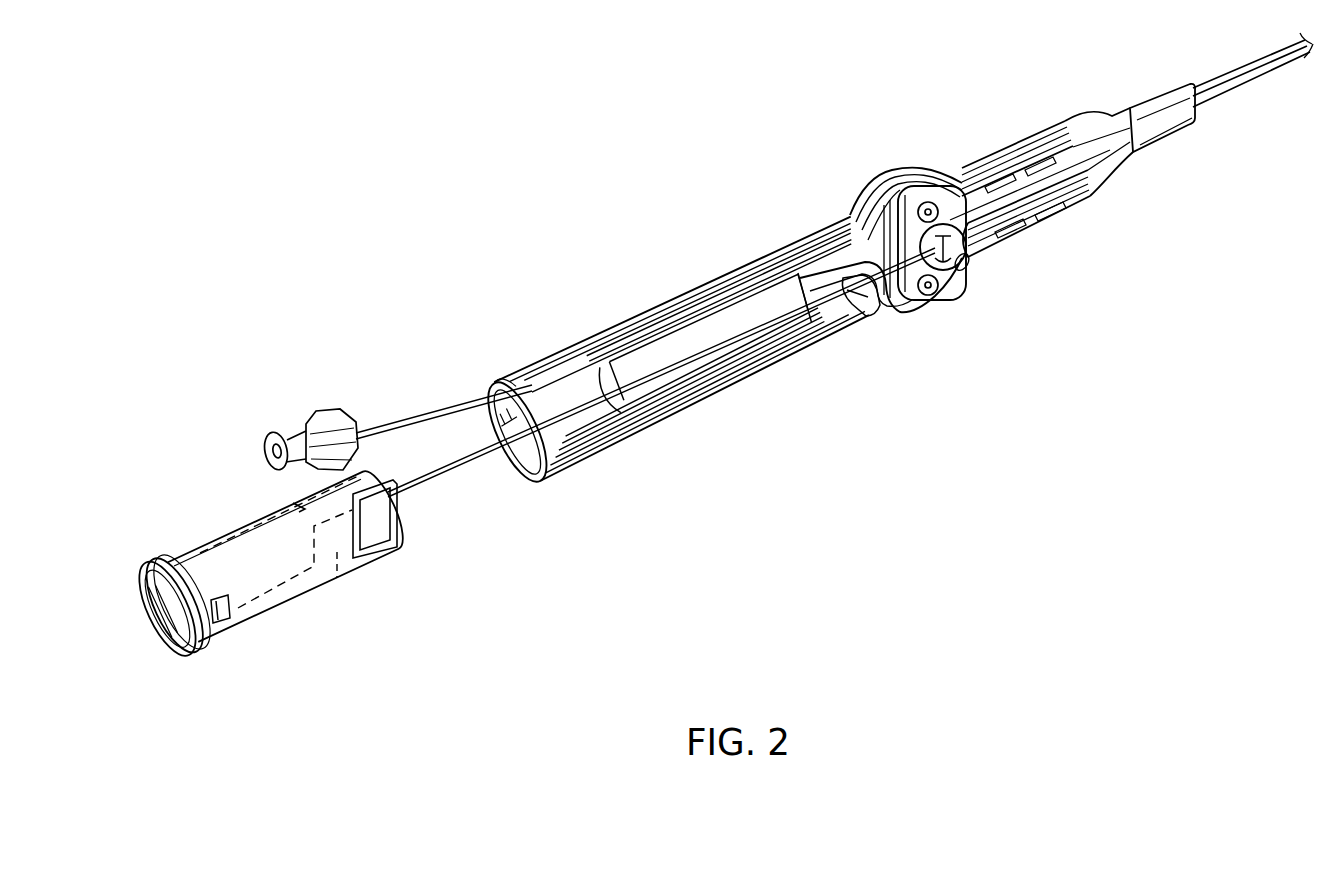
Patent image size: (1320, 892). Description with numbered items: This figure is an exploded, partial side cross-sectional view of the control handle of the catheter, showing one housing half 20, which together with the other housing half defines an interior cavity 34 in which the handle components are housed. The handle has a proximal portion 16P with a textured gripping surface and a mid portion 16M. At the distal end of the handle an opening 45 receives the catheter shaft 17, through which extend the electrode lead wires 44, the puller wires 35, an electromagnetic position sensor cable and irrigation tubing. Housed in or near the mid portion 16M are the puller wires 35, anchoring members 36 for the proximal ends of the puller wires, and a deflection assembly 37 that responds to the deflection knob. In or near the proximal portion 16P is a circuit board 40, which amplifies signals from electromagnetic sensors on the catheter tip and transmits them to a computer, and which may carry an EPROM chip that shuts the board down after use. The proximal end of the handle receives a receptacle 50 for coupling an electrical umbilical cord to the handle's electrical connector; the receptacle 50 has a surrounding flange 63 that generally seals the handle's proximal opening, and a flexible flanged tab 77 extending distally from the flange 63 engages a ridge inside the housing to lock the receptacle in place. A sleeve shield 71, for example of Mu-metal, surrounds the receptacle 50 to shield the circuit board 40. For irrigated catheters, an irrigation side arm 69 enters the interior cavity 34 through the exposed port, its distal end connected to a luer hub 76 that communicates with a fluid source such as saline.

The proximal portion 16P is at (613, 332).
The mid portion 16M is at (890, 316).
The catheter shaft 17 is at (1265, 82).
The housing half 20 is at (777, 252).
The interior cavity 34 is at (598, 420).
The puller wires 35 is at (957, 205).
The anchoring members 36 is at (1018, 168).
The deflection assembly 37 is at (948, 272).
The circuit board 40 is at (335, 553).
The electrode lead wires 44 is at (1120, 135).
The opening 45 is at (1195, 88).
The receptacle 50 is at (278, 592).
The flange 63 is at (150, 557).
The irrigation side arm 69 is at (418, 408).
The sleeve shield 71 is at (224, 540).
The luer hub 76 is at (291, 428).
The flexible flanged tab 77 is at (215, 618).